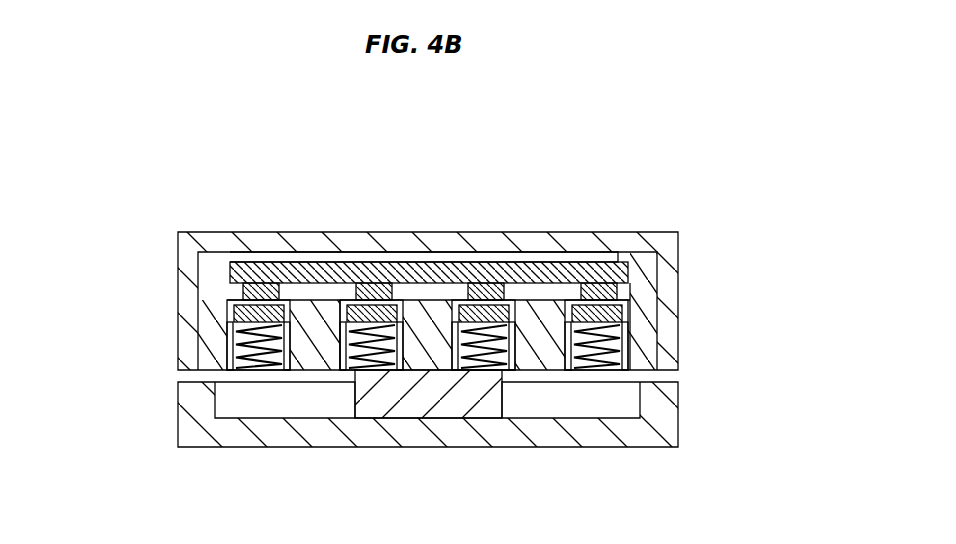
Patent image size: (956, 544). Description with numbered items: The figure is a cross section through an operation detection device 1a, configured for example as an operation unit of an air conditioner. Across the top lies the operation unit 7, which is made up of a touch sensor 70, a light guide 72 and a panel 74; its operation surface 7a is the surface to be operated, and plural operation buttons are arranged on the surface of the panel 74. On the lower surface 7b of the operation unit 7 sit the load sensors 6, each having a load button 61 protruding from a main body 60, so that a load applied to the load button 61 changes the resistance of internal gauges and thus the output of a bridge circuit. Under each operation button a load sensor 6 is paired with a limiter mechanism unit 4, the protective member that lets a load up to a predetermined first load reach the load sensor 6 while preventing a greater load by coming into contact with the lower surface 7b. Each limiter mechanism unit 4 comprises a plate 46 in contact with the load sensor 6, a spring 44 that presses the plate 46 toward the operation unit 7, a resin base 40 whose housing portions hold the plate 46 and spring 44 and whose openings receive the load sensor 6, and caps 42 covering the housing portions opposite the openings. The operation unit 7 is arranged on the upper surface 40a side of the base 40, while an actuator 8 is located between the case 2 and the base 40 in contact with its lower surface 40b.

The operation detection device 1a is at (799, 196).
The case 2 is at (665, 425).
The limiter mechanism unit 4 is at (431, 340).
The base 40 is at (430, 340).
The upper surface 40a is at (338, 336).
The lower surface 40b is at (538, 380).
The cap 42 is at (229, 340).
The spring 44 is at (240, 330).
The plate 46 is at (236, 315).
The load sensor 6 is at (431, 255).
The main body 60 is at (243, 293).
The load button 61 is at (248, 298).
The operation unit 7 is at (470, 279).
The touch sensor 70 is at (615, 276).
The light guide 72 is at (618, 256).
The panel 74 is at (662, 238).
The operation surface 7a is at (612, 248).
The lower surface 7b is at (526, 290).
The actuator 8 is at (458, 403).